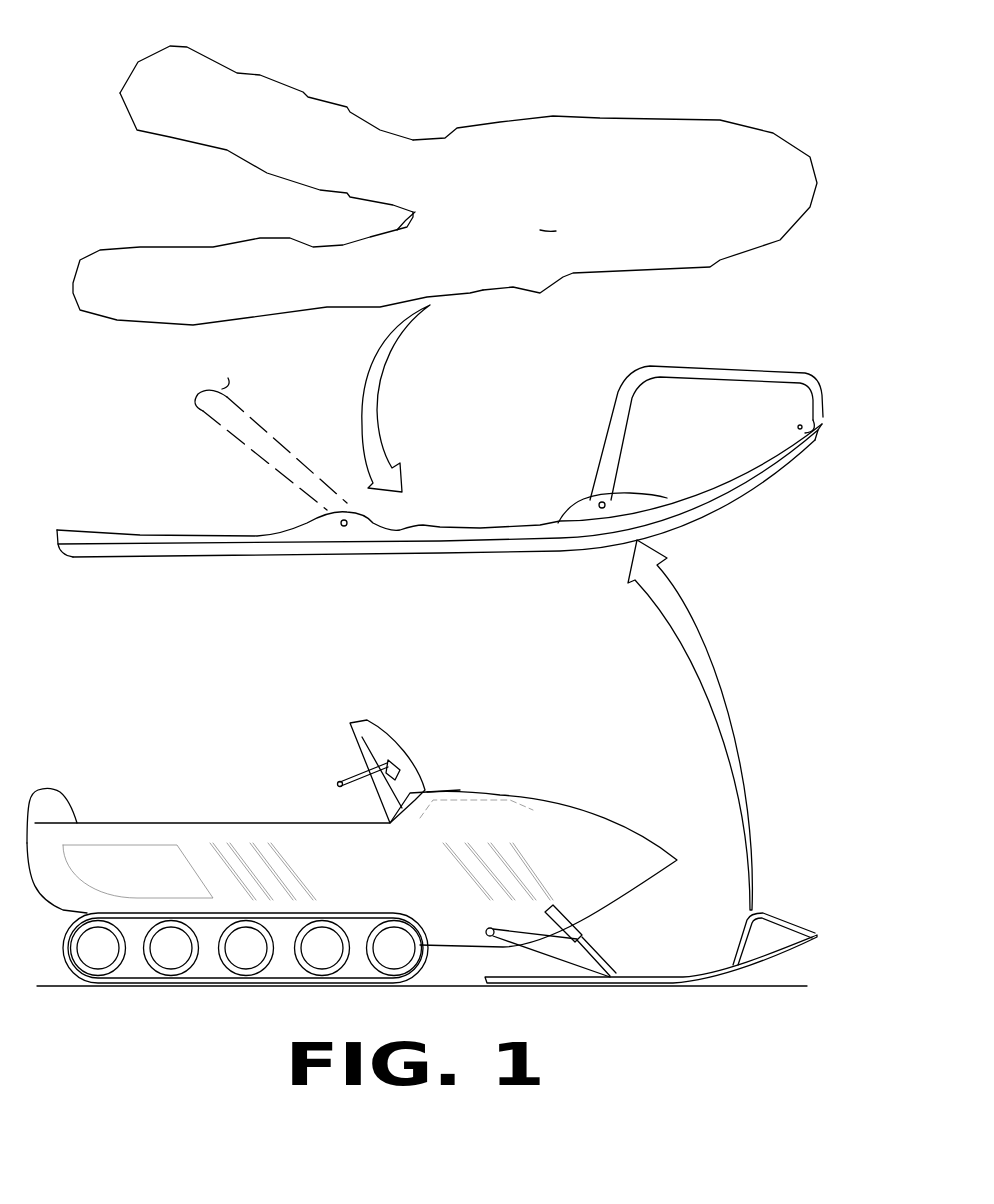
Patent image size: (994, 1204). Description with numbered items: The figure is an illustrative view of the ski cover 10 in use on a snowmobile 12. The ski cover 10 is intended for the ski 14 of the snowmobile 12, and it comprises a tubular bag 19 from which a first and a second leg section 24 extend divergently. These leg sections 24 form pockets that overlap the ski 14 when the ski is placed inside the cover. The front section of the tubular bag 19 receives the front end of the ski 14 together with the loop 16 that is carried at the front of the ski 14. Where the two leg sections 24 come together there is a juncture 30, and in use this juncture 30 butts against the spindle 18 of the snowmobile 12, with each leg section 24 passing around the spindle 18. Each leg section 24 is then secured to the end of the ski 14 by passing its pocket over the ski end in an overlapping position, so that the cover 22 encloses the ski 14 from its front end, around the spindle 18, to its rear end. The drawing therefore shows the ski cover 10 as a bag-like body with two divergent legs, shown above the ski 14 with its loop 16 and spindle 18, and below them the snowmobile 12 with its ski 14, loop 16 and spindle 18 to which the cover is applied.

The ski cover 10 is at (418, 70).
The snowmobile 12 is at (142, 822).
The ski 14 is at (368, 557).
The loop 16 is at (788, 377).
The spindle 18 is at (280, 443).
The tubular bag 19 is at (553, 230).
The ski cover 22 is at (653, 117).
The leg sections 24 is at (227, 153).
The juncture 30 is at (415, 212).